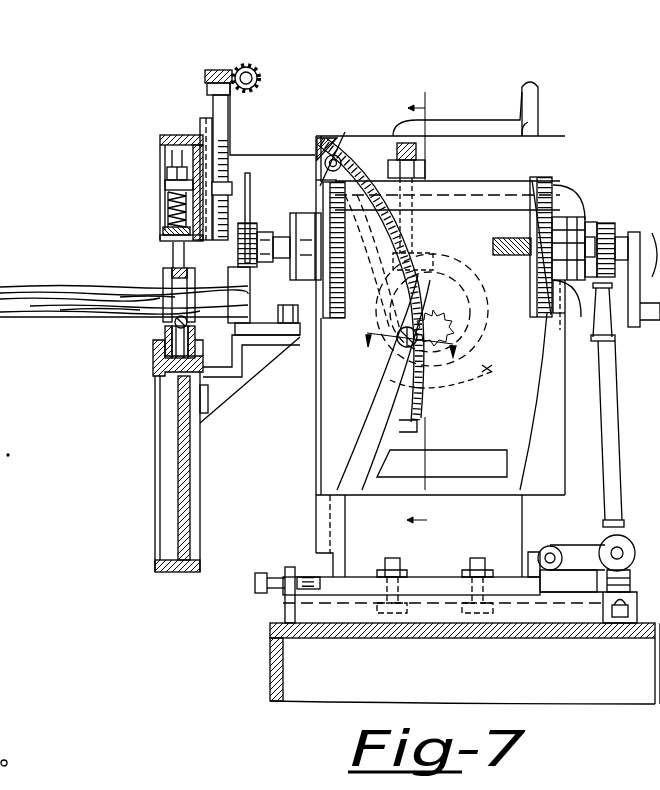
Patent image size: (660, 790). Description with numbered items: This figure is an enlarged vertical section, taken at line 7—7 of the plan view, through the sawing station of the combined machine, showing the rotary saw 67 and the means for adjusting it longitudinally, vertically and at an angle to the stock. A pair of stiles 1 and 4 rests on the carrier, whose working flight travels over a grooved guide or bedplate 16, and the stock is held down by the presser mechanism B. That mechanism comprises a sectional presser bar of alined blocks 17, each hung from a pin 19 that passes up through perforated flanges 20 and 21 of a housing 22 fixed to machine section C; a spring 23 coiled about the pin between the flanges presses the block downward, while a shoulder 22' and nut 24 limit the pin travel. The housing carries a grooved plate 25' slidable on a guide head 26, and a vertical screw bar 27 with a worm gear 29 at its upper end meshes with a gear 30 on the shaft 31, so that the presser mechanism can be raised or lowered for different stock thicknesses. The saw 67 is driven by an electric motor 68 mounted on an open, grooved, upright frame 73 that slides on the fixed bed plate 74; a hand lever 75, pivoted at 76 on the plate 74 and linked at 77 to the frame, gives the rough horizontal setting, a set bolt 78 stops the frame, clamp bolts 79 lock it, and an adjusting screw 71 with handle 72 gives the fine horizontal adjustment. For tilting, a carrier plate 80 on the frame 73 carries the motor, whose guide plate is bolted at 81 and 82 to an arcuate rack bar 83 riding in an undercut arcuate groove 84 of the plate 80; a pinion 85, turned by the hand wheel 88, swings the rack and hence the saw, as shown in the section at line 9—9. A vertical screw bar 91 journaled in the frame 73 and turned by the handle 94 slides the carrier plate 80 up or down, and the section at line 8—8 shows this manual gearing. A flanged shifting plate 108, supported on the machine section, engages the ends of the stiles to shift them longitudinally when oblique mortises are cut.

The stile 1 is at (82, 297).
The stile 4 is at (104, 311).
The section line 7— 7 is at (162, 342).
The section line 8— 8 is at (532, 344).
The section line 9— 9 is at (425, 333).
The bedplate 16 is at (178, 454).
The block 17 is at (164, 272).
The pin 19 is at (172, 257).
The flange 20 is at (160, 238).
The flange 21 is at (165, 186).
The housing 22 is at (159, 178).
The shoulder 22' is at (143, 223).
The spring 23 is at (168, 207).
The nut 24 is at (173, 168).
The grooved plate 25' is at (177, 164).
The guide head 26 is at (250, 165).
The screw bar 27 is at (222, 128).
The worm gear 29 is at (205, 75).
The gear 30 is at (262, 80).
The shaft 31 is at (258, 65).
The rotary saw 67 is at (251, 210).
The electric motor 68 is at (328, 338).
The adjusting screw 71 is at (578, 186).
The handle 72 is at (622, 237).
The upright frame 73 is at (480, 582).
The bed plate 74 is at (465, 648).
The hand lever 75 is at (611, 470).
The pivot 76 is at (619, 549).
The link 77 is at (576, 553).
The set bolt 78 is at (258, 592).
The clamp bolt 79 is at (401, 566).
The carrier plate 80 is at (530, 433).
The bolt 81 is at (340, 155).
The bolt 82 is at (393, 348).
The arcuate rack bar 83 is at (438, 192).
The arcuate groove 84 is at (340, 478).
The pinion 85 is at (488, 336).
The hand wheel 88 is at (487, 372).
The screw bar 91 is at (416, 165).
The handle 94 is at (518, 136).
The shifting plate 108 is at (250, 345).
The presser mechanism B is at (144, 176).
The machine section C is at (592, 668).